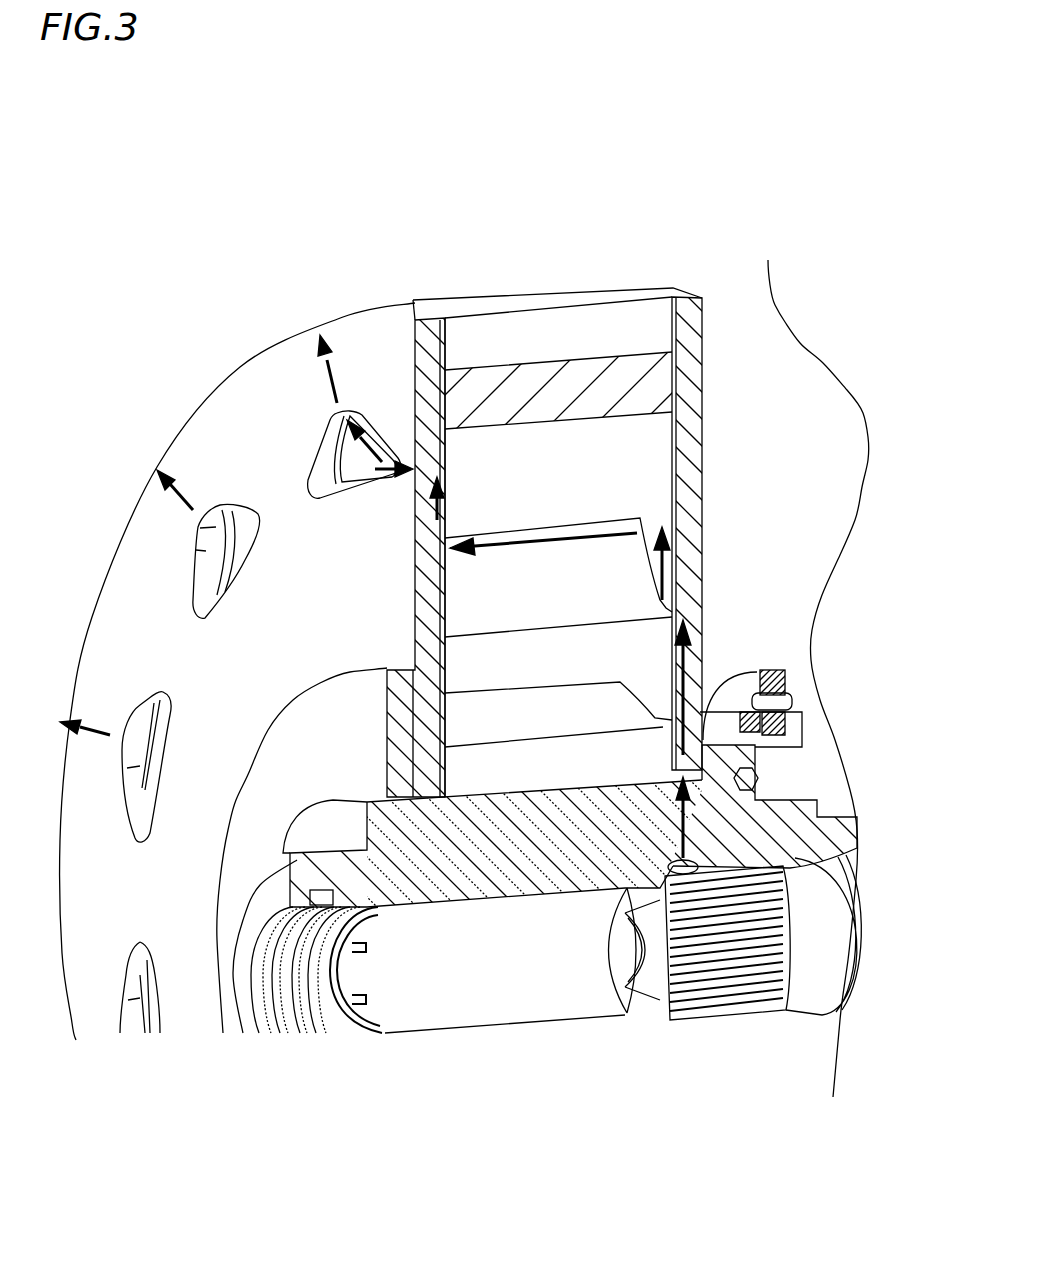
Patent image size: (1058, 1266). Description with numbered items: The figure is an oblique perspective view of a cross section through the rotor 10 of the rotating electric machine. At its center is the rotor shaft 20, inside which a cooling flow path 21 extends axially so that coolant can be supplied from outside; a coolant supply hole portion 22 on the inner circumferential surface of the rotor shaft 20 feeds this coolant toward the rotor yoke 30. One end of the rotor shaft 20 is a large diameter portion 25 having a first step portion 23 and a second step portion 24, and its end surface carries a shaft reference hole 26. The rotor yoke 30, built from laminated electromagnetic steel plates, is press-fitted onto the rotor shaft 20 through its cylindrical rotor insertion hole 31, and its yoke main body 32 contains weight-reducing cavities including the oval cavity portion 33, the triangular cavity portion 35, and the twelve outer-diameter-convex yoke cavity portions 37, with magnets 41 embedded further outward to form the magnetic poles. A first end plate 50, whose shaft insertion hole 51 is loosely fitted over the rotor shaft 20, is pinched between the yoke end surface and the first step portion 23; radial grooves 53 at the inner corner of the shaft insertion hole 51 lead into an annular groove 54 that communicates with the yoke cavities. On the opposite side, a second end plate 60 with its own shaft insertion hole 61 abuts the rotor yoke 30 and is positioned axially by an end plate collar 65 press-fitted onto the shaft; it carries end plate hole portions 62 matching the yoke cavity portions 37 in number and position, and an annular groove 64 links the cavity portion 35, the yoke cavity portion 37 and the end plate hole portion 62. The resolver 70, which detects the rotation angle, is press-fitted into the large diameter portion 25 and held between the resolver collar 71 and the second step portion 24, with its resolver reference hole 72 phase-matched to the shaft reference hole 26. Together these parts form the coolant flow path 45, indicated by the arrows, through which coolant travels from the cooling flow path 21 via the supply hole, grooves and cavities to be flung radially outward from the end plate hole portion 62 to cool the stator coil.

The rotor 10 is at (741, 145).
The rotor shaft 20 is at (866, 841).
The cooling flow path 21 is at (498, 1017).
The coolant supply hole portion 22 is at (625, 1013).
The first step portion 23 is at (760, 730).
The second step portion 24 is at (792, 710).
The large diameter portion 25 is at (795, 825).
The shaft reference hole 26 is at (760, 780).
The rotor yoke 30 is at (516, 284).
The rotor insertion hole 31 is at (473, 797).
The yoke main body 32 is at (568, 305).
The cavity portion 33 is at (460, 672).
The cavity portion 35 is at (452, 580).
The yoke cavity portion 37 is at (243, 520).
The magnet 41 is at (620, 365).
The coolant flow path 45 is at (637, 600).
The first end plate 50 is at (704, 310).
The shaft insertion hole 51 is at (742, 1013).
The radial groove 53 is at (676, 776).
The annular groove 54 is at (676, 635).
The second end plate 60 is at (430, 320).
The shaft insertion hole 61 is at (430, 800).
The end plate hole portion 62 is at (205, 545).
The annular groove 64 is at (448, 495).
The end plate collar 65 is at (278, 730).
The resolver 70 is at (748, 690).
The resolver collar 71 is at (746, 655).
The resolver reference hole 72 is at (790, 680).